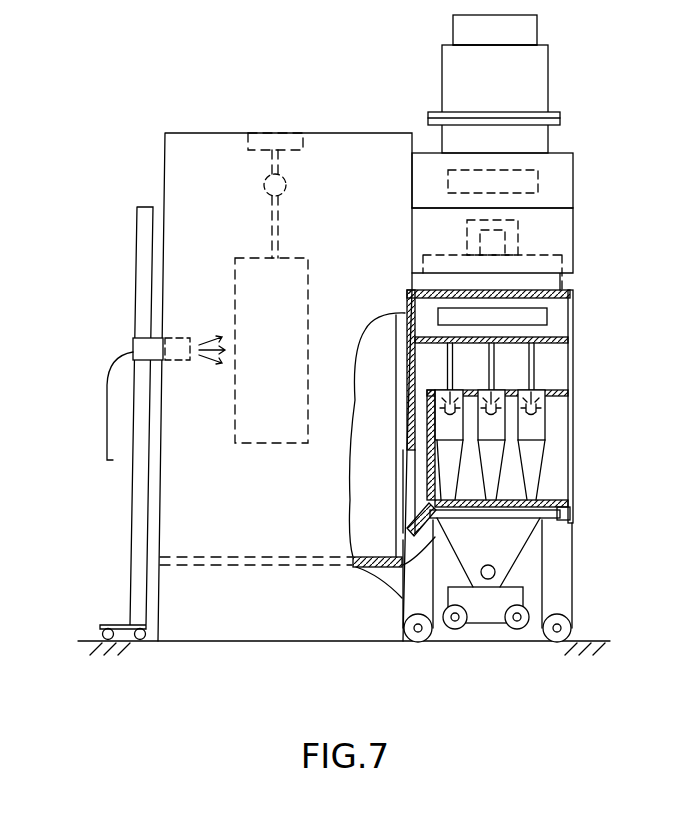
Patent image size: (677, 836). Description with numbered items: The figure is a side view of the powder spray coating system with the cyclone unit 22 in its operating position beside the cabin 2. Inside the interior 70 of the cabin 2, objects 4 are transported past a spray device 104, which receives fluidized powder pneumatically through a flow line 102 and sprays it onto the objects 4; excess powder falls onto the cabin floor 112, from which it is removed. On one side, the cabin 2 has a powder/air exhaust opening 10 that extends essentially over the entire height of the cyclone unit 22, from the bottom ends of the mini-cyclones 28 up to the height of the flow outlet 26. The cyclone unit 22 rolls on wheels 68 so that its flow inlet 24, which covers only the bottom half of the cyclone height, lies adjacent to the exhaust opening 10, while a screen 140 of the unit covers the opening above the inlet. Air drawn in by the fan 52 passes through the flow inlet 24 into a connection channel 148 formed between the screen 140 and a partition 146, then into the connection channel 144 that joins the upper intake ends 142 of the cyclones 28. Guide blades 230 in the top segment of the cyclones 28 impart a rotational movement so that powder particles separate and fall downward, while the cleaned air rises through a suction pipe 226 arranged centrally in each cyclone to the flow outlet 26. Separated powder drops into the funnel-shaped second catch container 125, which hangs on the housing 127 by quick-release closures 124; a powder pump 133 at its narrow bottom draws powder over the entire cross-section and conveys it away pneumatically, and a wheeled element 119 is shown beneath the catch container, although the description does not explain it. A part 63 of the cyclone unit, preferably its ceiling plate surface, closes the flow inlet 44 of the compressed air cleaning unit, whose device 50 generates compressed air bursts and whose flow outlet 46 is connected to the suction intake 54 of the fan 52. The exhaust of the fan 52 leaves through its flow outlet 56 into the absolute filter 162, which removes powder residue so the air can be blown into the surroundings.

The cabin 2 is at (176, 153).
The interior 70 is at (197, 215).
The spray device 104 is at (140, 345).
The flow line 102 is at (105, 440).
The objects 4 is at (237, 432).
The cabin floor 112 is at (280, 568).
The filter 162 is at (528, 32).
The flow outlet 56 is at (522, 46).
The fan 52 is at (533, 92).
The suction intake 54 is at (560, 118).
The flow outlet 46 is at (533, 182).
The device 50 is at (512, 237).
The flow inlet 44 is at (532, 282).
The part 63 is at (570, 283).
The cyclone unit 22 is at (573, 305).
The flow outlet 26 is at (533, 320).
The suction pipe 226 is at (492, 362).
The connection channel 144 is at (555, 370).
The upper intake ends 142 is at (455, 392).
The guide blades 230 is at (543, 413).
The mini-cyclones 28 is at (527, 443).
The housing 127 is at (573, 483).
The quick-release closures 124 is at (597, 520).
The second catch container 125 is at (512, 547).
The powder pump 133 is at (495, 573).
The wheels 68 is at (418, 642).
The collecting cart 119 is at (455, 629).
The flow inlet 24 is at (410, 500).
The exhaust opening 10 is at (400, 443).
The connection channel 148 is at (427, 420).
The partition 146 is at (428, 400).
The screen 140 is at (407, 360).